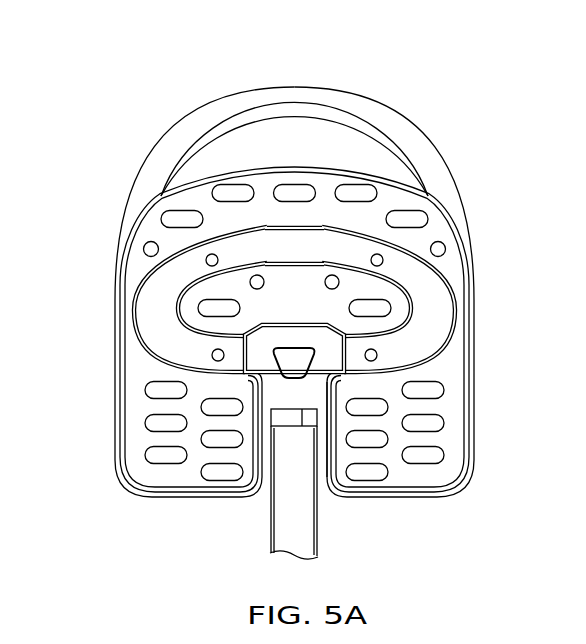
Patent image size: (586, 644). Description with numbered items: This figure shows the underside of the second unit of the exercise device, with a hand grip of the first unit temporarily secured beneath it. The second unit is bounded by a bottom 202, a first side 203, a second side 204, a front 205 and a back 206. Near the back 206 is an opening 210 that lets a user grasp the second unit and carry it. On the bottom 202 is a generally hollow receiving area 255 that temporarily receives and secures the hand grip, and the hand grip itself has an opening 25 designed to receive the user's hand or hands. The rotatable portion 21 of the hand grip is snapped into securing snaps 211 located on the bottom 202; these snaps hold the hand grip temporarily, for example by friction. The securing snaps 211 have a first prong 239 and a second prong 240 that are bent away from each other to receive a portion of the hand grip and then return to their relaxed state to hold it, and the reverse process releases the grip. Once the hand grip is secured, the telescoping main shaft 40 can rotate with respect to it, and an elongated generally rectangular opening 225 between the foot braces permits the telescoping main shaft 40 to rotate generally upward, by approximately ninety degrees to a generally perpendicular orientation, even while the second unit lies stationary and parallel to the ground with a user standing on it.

The back 206 is at (293, 88).
The opening 210 is at (223, 146).
The generally hollow receiving area 255 is at (348, 283).
The opening 25 is at (365, 287).
The rotatable portion 21 is at (433, 283).
The second prong 240 is at (347, 322).
The first side 203 is at (473, 362).
The first prong 239 is at (345, 376).
The bottom 202 is at (455, 420).
The elongated generally rectangular opening 225 is at (323, 467).
The telescoping main shaft 40 is at (308, 535).
The front 205 is at (192, 497).
The second side 204 is at (115, 398).
The securing snaps 211 is at (351, 333).